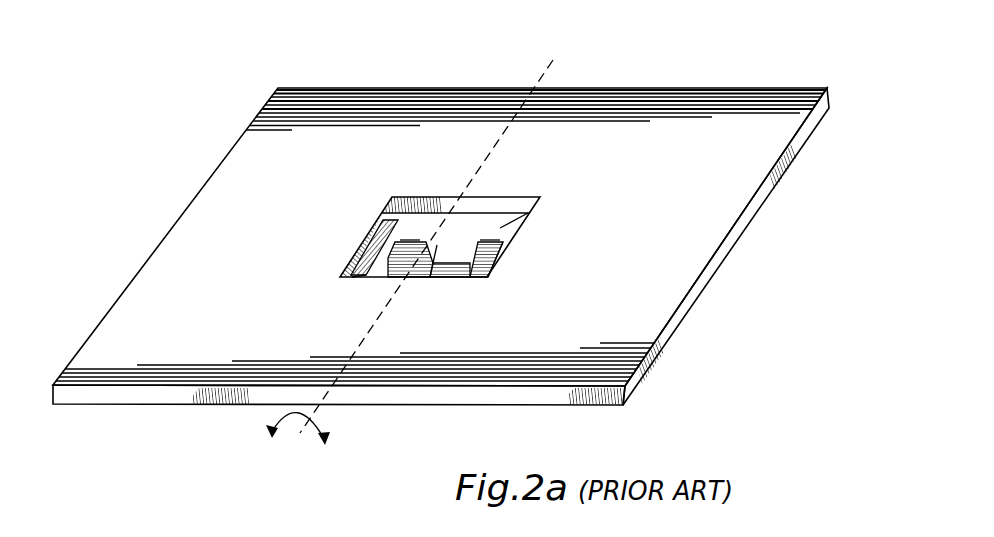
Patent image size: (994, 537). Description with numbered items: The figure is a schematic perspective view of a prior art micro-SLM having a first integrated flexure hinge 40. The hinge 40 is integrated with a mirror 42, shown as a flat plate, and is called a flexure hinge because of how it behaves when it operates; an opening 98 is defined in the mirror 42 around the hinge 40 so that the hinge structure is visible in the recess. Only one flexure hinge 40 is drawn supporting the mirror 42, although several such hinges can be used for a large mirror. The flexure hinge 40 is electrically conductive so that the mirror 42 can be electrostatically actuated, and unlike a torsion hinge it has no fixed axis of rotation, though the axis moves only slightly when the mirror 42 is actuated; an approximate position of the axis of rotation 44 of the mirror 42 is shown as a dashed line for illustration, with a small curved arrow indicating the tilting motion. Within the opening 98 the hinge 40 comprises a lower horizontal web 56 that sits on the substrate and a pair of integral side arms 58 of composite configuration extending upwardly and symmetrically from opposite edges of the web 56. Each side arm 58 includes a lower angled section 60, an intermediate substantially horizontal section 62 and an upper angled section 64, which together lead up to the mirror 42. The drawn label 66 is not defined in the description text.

The flexure hinge 40 is at (402, 223).
The mirror 42 is at (166, 208).
The axis of rotation 44 is at (548, 73).
The lower horizontal web 56 is at (441, 277).
The side arms 58 is at (417, 235).
The lower angled section 60 is at (437, 245).
The intermediate substantially horizontal section 62 is at (400, 263).
The upper angled section 64 is at (372, 238).
The stops 66 is at (358, 259).
The opening 98 is at (500, 228).